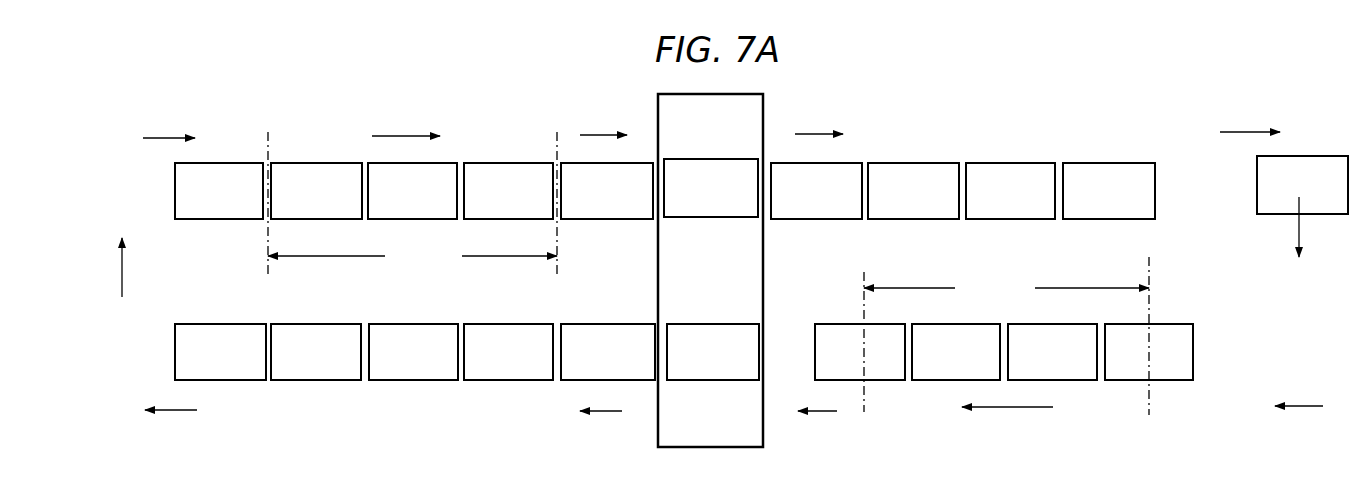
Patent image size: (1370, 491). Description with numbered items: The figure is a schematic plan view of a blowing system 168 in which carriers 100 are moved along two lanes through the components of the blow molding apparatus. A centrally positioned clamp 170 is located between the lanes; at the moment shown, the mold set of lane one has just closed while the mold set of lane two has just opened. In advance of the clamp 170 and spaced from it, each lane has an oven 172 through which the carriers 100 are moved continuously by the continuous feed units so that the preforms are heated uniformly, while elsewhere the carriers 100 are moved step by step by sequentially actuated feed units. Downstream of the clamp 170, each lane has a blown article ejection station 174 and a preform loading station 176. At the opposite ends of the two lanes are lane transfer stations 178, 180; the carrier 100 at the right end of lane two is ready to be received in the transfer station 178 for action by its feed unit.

The carrier 100 is at (1135, 197).
The blowing system 168 is at (970, 82).
The clamp 170 is at (772, 265).
The oven 172 is at (498, 145).
The blown article ejection station 174 is at (953, 147).
The preform loading station 176 is at (1135, 145).
The lane transfer station 178 is at (1360, 305).
The lane transfer station 180 is at (76, 265).